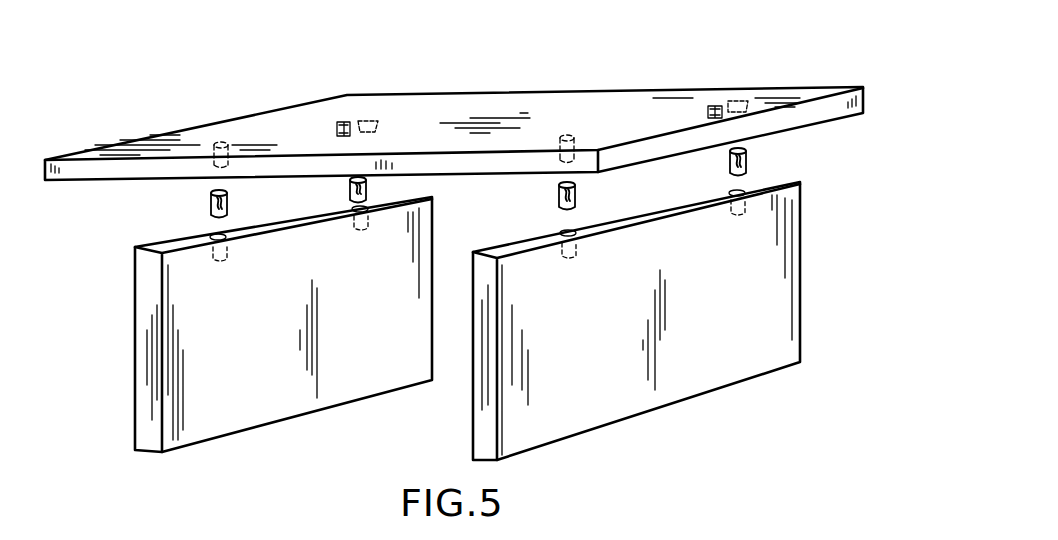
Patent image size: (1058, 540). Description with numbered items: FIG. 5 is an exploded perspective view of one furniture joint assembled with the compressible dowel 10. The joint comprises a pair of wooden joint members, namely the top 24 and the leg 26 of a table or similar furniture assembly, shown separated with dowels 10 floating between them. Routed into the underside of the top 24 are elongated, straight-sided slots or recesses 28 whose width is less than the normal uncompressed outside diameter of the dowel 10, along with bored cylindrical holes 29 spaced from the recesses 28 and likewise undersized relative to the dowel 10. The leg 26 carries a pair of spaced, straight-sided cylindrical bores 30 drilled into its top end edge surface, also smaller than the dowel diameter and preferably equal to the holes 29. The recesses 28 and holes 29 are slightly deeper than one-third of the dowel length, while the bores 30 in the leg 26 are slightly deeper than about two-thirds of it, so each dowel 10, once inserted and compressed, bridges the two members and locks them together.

The dowel 10 is at (348, 189).
The top 24 is at (673, 98).
The leg 26 is at (325, 384).
The elongated slot or recess 28 is at (367, 117).
The cylindrical hole 29 is at (214, 143).
The cylindrical bore 30 is at (350, 228).